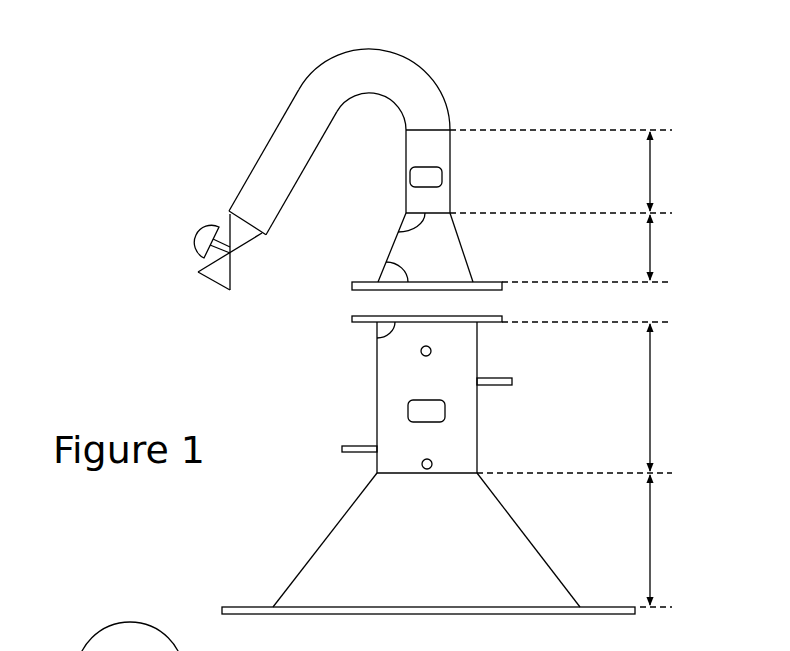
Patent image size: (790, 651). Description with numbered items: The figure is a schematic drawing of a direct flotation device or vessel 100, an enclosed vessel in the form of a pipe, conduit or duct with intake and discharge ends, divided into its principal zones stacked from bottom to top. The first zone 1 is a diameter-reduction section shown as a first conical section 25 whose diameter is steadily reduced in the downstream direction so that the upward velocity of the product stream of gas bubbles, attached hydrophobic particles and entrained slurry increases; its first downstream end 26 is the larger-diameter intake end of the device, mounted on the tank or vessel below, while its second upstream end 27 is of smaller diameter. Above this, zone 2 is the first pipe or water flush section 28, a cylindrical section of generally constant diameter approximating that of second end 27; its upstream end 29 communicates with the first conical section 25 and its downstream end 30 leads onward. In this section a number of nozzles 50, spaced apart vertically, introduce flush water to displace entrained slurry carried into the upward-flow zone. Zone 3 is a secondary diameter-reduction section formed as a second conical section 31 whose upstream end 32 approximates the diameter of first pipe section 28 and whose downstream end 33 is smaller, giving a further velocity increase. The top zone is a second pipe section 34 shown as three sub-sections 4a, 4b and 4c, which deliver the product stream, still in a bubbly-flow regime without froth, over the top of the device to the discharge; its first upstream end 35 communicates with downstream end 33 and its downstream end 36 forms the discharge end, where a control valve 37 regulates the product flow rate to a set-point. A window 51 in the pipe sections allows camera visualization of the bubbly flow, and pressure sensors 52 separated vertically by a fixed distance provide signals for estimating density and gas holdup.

The direct flotation device 100 is at (271, 83).
The sub-section of bubbly-flow zone 4b is at (450, 71).
The sub-section of bubbly-flow zone 4c is at (252, 151).
The sub-section of bubbly-flow zone 4a is at (652, 168).
The downstream end of second pipe section 36 is at (225, 208).
The control valve 37 is at (192, 225).
The first upstream end of second pipe section 35 is at (410, 205).
The window 51 is at (437, 158).
The second pipe section 34 is at (450, 196).
The downstream end of second conical section 33 is at (398, 232).
The upstream end of second conical section 32 is at (386, 260).
The second conical section 31 is at (465, 252).
The secondary diameter-reduction zone 3 is at (652, 242).
The downstream end of first pipe section 30 is at (381, 336).
The nozzles 50 is at (342, 448).
The upstream end of first pipe section 29 is at (403, 467).
The pressure sensors 52 is at (431, 350).
The first pipe section 28 is at (477, 461).
The second upstream end of first conical section 27 is at (438, 474).
The first conical section 25 is at (268, 553).
The first downstream end of first conical section 26 is at (240, 607).
The first pipe or water flush zone 2 is at (652, 396).
The first zone 1 is at (652, 536).